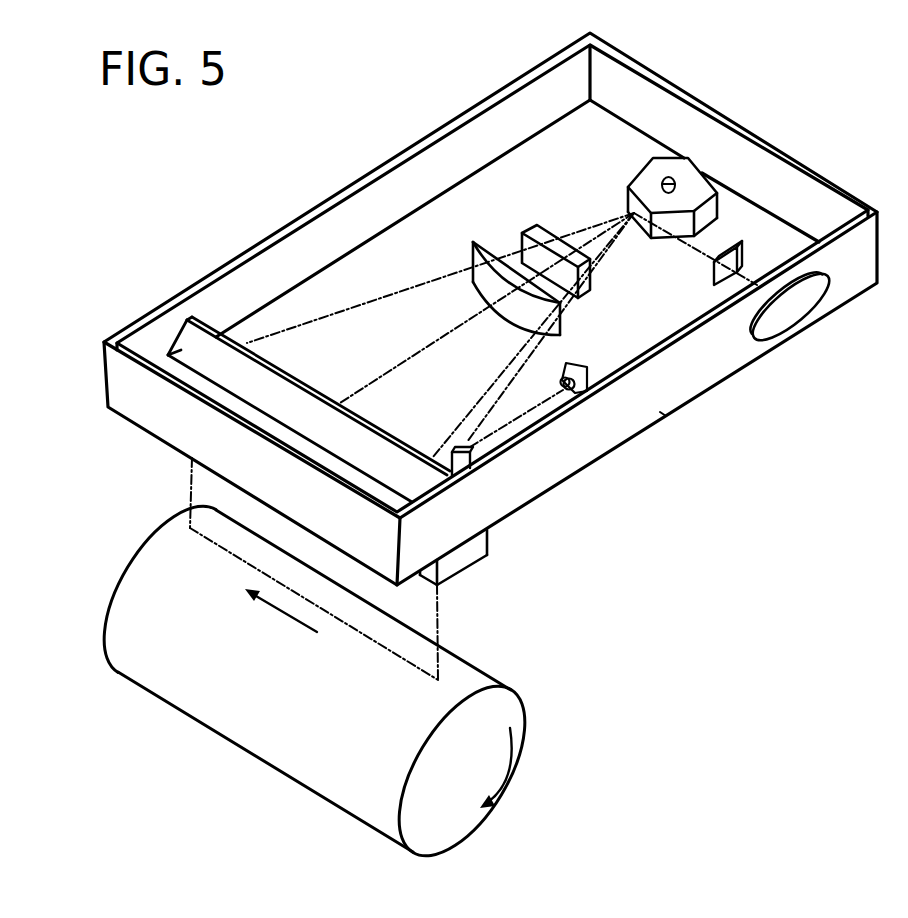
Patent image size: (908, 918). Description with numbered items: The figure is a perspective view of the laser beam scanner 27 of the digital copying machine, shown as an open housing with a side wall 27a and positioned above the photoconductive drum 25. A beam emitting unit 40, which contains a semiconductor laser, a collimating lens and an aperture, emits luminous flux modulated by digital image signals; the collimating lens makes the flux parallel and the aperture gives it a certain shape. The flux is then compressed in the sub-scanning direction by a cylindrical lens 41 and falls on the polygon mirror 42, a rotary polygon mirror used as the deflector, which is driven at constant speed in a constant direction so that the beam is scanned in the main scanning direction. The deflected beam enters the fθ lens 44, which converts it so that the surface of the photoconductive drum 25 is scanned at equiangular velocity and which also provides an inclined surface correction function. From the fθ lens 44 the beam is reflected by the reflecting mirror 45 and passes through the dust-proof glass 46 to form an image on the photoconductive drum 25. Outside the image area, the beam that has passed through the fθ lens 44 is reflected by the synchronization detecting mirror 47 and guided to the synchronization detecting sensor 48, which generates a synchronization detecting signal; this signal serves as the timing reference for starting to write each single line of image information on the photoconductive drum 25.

The photoconductive drum 25 is at (257, 743).
The laser beam scanner 27 is at (388, 133).
The side wall of housing 27a is at (663, 414).
The beam emitting unit 40 is at (793, 322).
The cylindrical lens 41 is at (742, 262).
The polygon mirror 42 is at (641, 175).
The fθ lens 44 is at (488, 245).
The reflecting mirror 45 is at (190, 338).
The dust-proof glass 46 is at (466, 557).
The synchronization detecting mirror 47 is at (470, 468).
The synchronization detecting sensor 48 is at (581, 367).